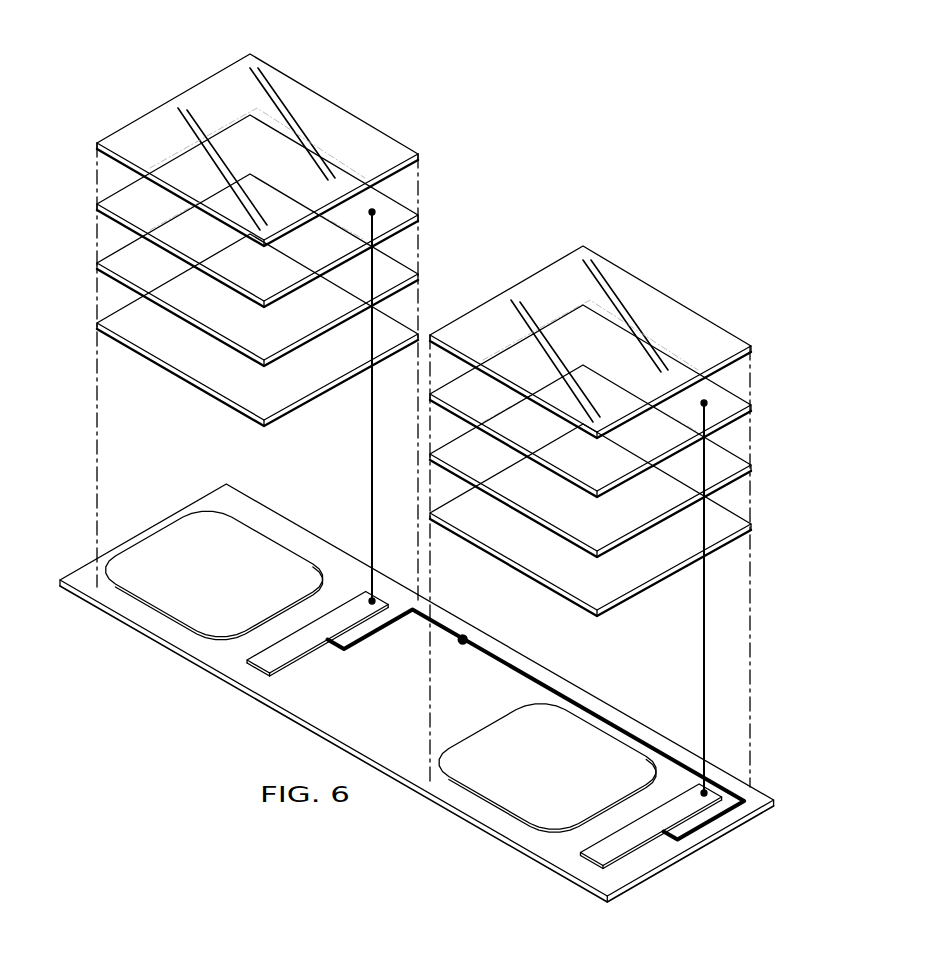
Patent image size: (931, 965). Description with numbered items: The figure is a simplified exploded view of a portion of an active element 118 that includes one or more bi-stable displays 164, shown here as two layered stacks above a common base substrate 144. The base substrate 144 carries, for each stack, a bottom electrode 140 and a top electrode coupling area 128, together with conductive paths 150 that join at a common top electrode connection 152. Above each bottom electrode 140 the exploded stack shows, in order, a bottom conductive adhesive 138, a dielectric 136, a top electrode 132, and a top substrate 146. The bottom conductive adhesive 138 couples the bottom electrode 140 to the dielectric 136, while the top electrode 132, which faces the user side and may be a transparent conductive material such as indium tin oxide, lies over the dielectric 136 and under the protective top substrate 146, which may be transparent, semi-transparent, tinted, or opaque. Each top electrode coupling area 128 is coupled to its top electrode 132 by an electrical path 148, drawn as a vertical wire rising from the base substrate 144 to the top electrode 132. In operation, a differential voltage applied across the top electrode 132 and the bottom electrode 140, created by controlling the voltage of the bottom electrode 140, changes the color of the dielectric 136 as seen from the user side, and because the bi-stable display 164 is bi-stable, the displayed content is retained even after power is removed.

The active element 118 is at (531, 59).
The top electrode coupling area 128 is at (250, 650).
The top electrode 132 is at (127, 196).
The dielectric 136 is at (127, 255).
The bottom conductive adhesive 138 is at (126, 313).
The bottom electrode 140 is at (169, 540).
The base substrate 144 is at (683, 853).
The top substrate 146 is at (153, 122).
The electrical path 148 is at (371, 456).
The conductive paths 150 is at (343, 641).
The common top electrode connection 152 is at (465, 636).
The bi-stable display 164 is at (425, 326).